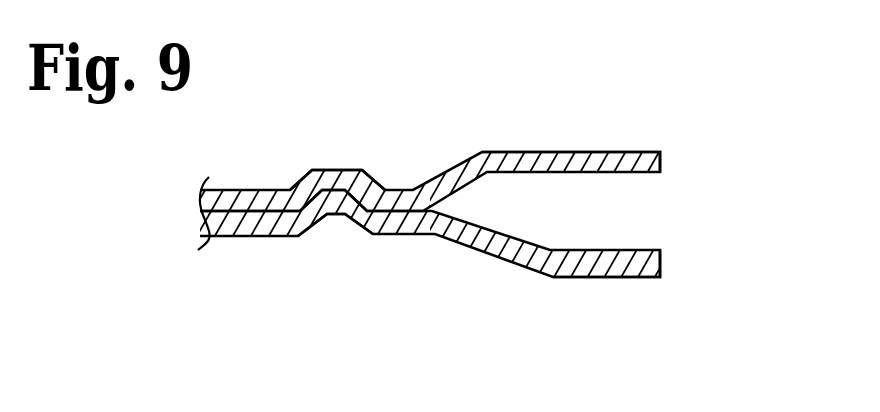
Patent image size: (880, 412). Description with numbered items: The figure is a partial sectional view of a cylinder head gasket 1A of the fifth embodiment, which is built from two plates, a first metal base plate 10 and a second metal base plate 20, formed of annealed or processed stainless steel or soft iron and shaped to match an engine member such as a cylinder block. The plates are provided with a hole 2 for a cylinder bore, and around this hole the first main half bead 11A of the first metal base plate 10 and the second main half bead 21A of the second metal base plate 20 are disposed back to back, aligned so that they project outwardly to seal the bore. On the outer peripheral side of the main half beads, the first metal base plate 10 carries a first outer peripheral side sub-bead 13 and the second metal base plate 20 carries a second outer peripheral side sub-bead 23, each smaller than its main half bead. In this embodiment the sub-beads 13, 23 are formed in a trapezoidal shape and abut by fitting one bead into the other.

The cylinder head gasket 1A is at (654, 142).
The hole for cylinder bore 2 is at (727, 228).
The first metal base plate 10 is at (662, 155).
The second metal base plate 20 is at (663, 258).
The first outer peripheral side sub-bead 13 is at (338, 168).
The second outer peripheral side sub-bead 23 is at (333, 215).
The first main half bead 11A is at (556, 151).
The second main half bead 21A is at (568, 265).